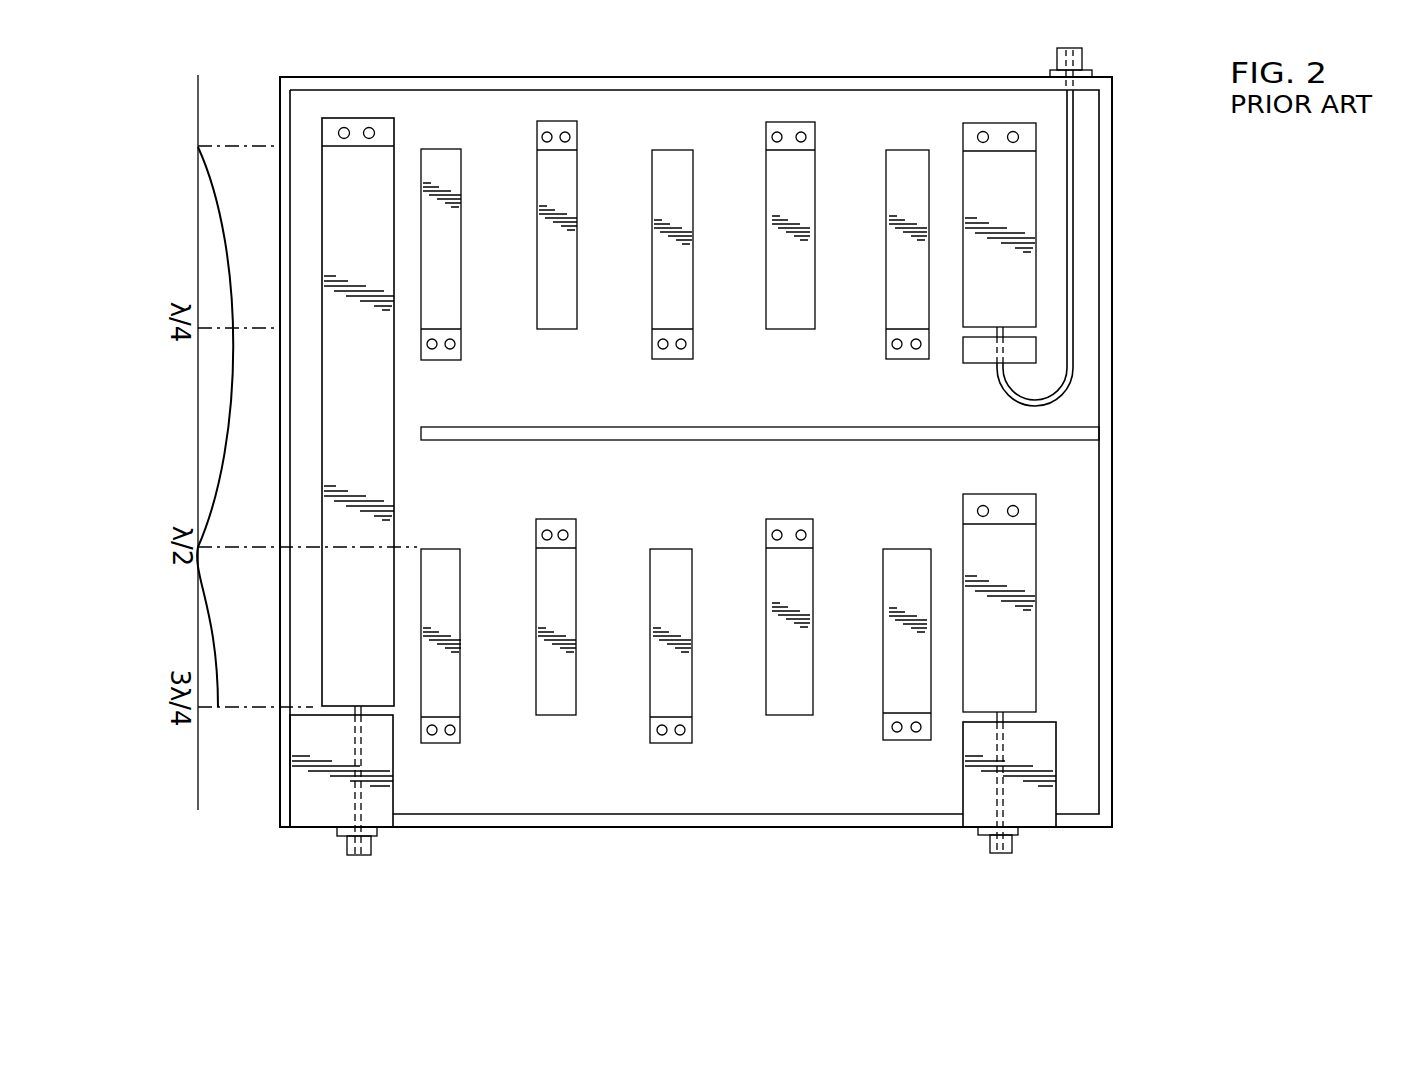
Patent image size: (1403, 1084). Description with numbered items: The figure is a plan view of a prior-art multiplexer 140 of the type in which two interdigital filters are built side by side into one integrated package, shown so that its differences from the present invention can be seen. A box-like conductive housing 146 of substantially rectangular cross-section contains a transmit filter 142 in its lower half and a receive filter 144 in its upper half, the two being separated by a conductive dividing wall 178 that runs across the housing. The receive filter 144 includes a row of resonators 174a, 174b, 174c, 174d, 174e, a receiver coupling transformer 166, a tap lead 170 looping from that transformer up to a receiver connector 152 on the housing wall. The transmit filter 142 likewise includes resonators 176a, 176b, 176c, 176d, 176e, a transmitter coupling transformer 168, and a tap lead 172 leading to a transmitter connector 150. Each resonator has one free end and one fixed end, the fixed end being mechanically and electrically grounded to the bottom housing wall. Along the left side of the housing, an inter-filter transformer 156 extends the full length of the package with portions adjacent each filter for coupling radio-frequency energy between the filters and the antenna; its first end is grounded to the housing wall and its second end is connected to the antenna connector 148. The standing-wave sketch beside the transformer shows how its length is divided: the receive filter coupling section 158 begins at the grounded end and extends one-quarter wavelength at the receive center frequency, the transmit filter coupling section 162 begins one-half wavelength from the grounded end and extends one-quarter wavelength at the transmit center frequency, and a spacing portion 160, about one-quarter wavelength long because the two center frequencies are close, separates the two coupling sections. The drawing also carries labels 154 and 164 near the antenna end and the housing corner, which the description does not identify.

The prior-art multiplexer 140 is at (488, 56).
The transmit filter 142 is at (800, 804).
The receive filter 144 is at (842, 411).
The conductive housing 146 is at (1112, 173).
The antenna connector 148 is at (373, 843).
The transmitter connector 150 is at (990, 844).
The receiver connector 152 is at (1050, 66).
The antenna coupling box 154 is at (355, 793).
The inter-filter transformer 156 is at (380, 466).
The receive filter coupling section 158 is at (137, 145).
The spacing portion 160 is at (137, 330).
The transmit filter coupling section 162 is at (137, 547).
The housing inner wall 164 is at (283, 210).
The receiver coupling transformer 166 is at (985, 176).
The transmitter coupling transformer 168 is at (1023, 665).
The tap lead 170 is at (1073, 358).
The tap lead 172 is at (1000, 745).
The resonator 174a is at (462, 310).
The resonator 174b is at (577, 312).
The resonator 174c is at (693, 313).
The resonator 174d is at (815, 303).
The resonator 174e is at (930, 317).
The resonator 176a is at (461, 702).
The resonator 176b is at (576, 700).
The resonator 176c is at (692, 703).
The resonator 176d is at (813, 696).
The resonator 176e is at (931, 703).
The conductive dividing wall 178 is at (738, 440).